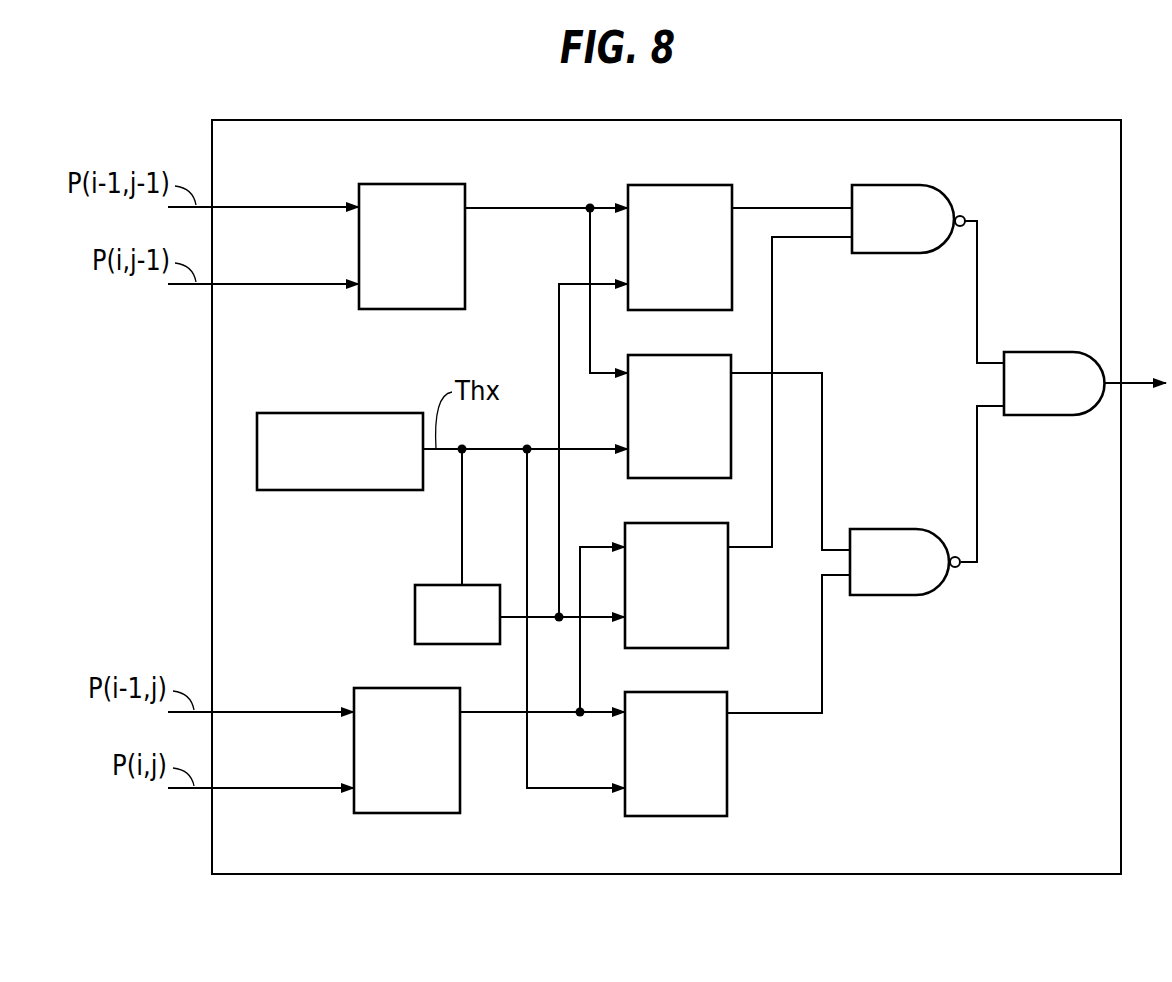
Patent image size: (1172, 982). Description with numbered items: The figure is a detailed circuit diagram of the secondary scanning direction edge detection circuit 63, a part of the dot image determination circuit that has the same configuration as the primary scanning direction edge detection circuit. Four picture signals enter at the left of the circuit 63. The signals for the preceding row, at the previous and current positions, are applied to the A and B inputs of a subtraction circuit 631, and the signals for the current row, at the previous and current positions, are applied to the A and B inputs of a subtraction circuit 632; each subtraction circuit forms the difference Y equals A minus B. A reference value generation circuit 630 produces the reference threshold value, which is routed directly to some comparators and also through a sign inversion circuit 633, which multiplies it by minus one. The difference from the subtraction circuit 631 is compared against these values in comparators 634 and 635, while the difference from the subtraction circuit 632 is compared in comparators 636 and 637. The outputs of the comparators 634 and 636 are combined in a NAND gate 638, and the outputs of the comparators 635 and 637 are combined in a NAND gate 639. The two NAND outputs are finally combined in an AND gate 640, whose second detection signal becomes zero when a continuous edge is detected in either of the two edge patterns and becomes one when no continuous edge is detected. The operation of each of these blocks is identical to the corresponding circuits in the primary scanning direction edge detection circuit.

The secondary scanning direction edge detection circuit 63 is at (836, 874).
The reference value generation circuit 630 is at (323, 413).
The subtraction circuit 631 is at (395, 309).
The subtraction circuit 632 is at (390, 813).
The sign inversion circuit 633 is at (440, 585).
The comparator 634 is at (676, 185).
The comparator 635 is at (676, 355).
The comparator 636 is at (672, 523).
The comparator 637 is at (672, 692).
The NAND gate 638 is at (913, 185).
The NAND gate 639 is at (866, 529).
The AND gate 640 is at (1023, 352).